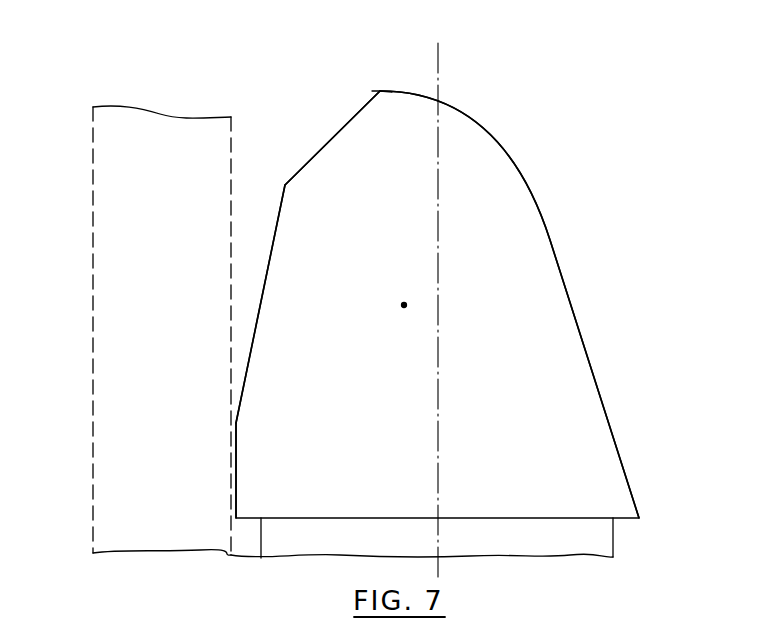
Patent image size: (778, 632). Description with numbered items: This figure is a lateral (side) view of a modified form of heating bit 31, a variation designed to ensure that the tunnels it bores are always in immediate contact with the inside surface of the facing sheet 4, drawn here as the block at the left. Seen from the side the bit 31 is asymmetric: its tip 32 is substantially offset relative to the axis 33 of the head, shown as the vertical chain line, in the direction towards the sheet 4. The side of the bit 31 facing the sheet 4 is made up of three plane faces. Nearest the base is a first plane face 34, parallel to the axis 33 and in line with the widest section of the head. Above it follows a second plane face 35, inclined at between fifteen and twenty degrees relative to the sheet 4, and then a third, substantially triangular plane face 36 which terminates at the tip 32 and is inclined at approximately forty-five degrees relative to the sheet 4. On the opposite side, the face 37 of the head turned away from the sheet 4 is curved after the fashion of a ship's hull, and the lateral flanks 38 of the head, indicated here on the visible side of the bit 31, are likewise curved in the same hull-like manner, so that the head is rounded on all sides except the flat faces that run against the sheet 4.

The facing sheet 4 is at (92, 316).
The bit 31 is at (518, 500).
The tip 32 is at (377, 87).
The axis 33 is at (440, 69).
The first plane face 34 is at (234, 446).
The second plane face 35 is at (270, 246).
The third plane face 36 is at (318, 147).
The face of the head opposite the sheet 37 is at (512, 162).
The lateral flanks 38 is at (406, 304).